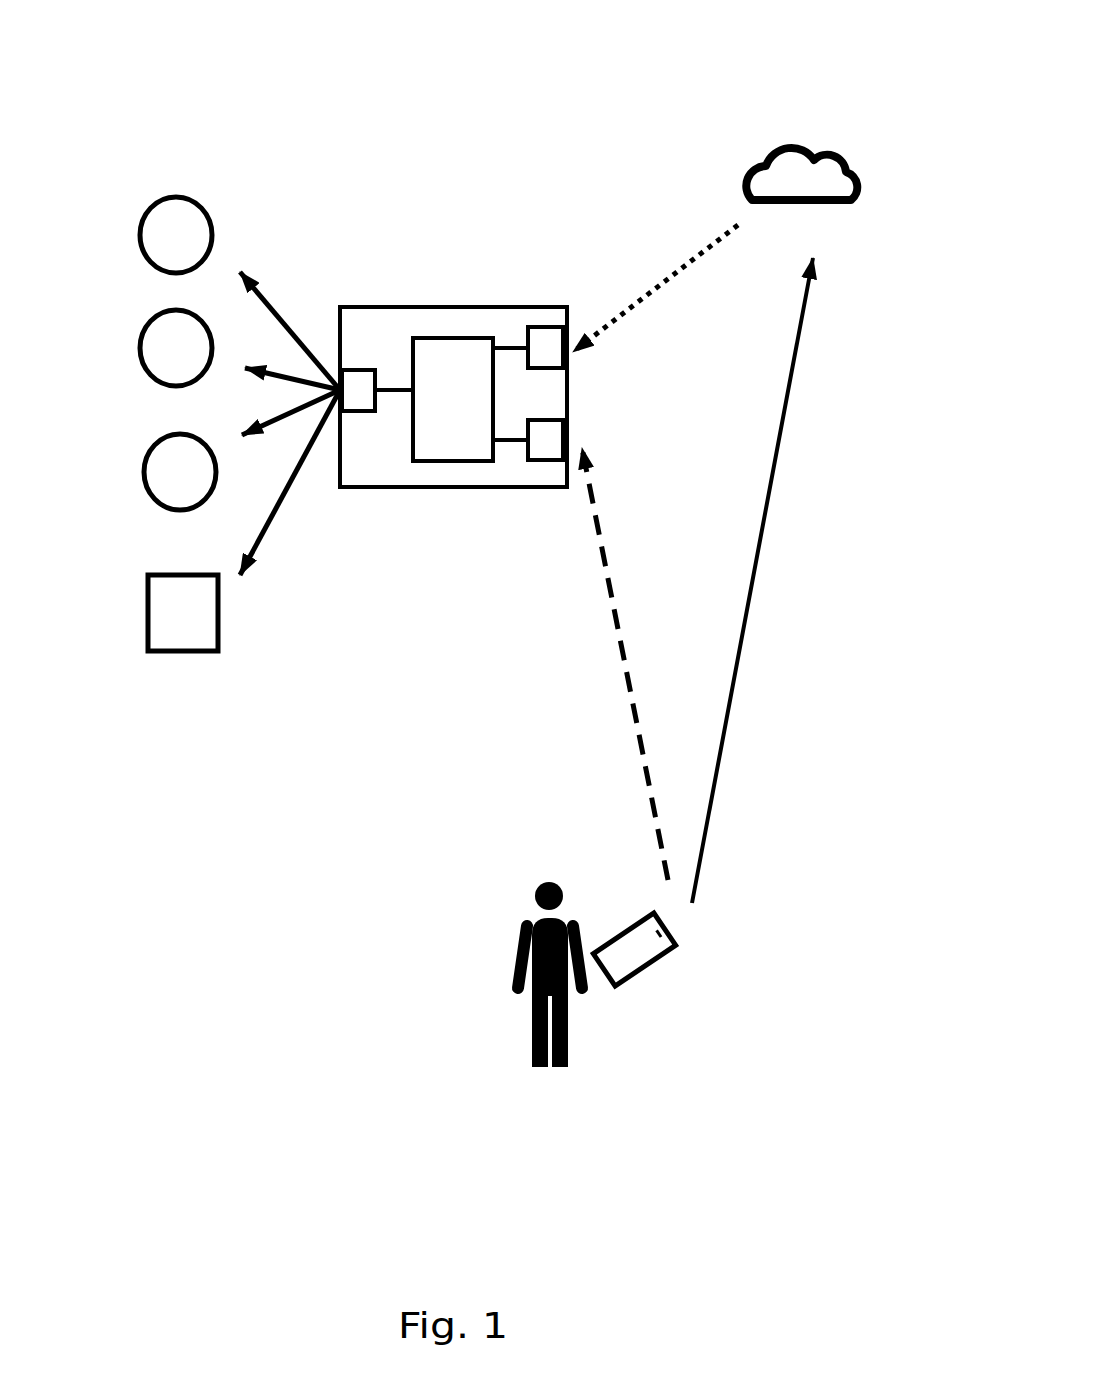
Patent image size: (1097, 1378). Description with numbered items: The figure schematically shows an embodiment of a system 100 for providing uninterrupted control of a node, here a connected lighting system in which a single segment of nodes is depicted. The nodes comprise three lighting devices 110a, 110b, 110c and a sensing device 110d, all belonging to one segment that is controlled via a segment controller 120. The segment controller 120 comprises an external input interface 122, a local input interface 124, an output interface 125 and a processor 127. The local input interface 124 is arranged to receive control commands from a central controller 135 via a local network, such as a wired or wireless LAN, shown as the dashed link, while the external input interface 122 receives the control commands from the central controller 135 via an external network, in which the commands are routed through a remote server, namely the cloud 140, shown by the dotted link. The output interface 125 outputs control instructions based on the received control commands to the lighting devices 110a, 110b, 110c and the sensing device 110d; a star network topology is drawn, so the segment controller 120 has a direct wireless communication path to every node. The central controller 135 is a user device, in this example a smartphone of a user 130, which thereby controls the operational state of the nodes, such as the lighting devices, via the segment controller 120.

The system 100 is at (443, 1189).
The lighting device 110a is at (140, 257).
The lighting device 110b is at (140, 352).
The lighting device 110c is at (140, 478).
The sensing device 110d is at (140, 628).
The segment controller 120 is at (437, 307).
The external input interface 122 is at (540, 327).
The local input interface 124 is at (547, 460).
The output interface 125 is at (355, 368).
The processor 127 is at (423, 452).
The user 130 is at (506, 917).
The central controller 135 is at (653, 973).
The cloud 140 is at (787, 127).